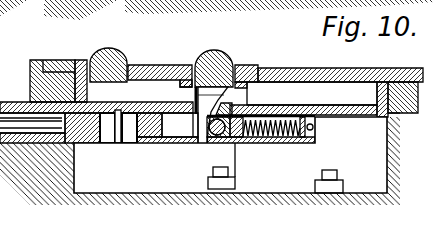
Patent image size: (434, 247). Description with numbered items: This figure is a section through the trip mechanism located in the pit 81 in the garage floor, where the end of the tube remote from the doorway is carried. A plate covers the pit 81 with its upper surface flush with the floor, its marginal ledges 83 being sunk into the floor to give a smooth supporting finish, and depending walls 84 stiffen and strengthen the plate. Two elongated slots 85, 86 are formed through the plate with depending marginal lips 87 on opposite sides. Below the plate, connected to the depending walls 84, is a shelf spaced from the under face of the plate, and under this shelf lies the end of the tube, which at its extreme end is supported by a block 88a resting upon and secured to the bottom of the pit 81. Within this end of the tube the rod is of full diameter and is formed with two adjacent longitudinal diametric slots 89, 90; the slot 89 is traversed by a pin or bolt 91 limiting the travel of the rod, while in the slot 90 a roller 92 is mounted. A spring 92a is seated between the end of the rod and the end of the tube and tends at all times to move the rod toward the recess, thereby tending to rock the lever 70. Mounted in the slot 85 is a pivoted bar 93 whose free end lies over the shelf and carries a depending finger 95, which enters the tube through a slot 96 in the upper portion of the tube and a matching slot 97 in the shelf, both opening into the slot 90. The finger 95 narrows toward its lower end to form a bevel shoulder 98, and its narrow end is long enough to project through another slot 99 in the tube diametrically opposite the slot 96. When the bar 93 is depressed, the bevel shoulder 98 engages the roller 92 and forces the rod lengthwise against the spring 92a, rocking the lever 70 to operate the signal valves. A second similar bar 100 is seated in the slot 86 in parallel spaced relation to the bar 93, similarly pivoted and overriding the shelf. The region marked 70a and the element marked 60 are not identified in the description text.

The marginal ledges 83 is at (50, 60).
The housing 60 is at (15, 106).
The lever 70 is at (63, 138).
The rod bore 70a is at (37, 121).
The bar 100 is at (110, 56).
The elongated slot 86 is at (150, 65).
The marginal lips 87 is at (138, 82).
The bar 93 is at (214, 52).
The elongated slot 85 is at (242, 68).
The depending walls 84 is at (329, 72).
The spring 92a is at (294, 108).
The bevel shoulder 98 is at (228, 107).
The slot 97 is at (183, 100).
The slot 99 is at (210, 130).
The depending finger 95 is at (211, 98).
The longitudinal diametric slot 89 is at (128, 128).
The pin or bolt 91 is at (115, 144).
The slot 96 is at (190, 143).
The longitudinal diametric slot 90 is at (190, 125).
The roller 92 is at (222, 138).
The block 88a is at (289, 200).
The pit 81 is at (98, 178).